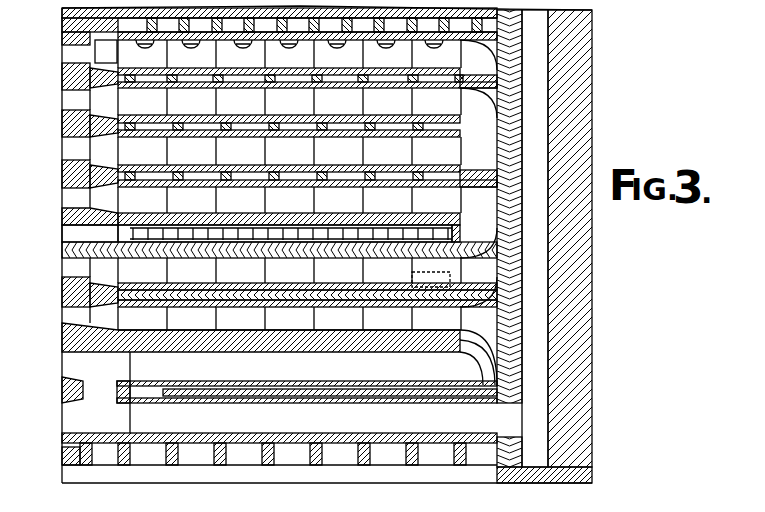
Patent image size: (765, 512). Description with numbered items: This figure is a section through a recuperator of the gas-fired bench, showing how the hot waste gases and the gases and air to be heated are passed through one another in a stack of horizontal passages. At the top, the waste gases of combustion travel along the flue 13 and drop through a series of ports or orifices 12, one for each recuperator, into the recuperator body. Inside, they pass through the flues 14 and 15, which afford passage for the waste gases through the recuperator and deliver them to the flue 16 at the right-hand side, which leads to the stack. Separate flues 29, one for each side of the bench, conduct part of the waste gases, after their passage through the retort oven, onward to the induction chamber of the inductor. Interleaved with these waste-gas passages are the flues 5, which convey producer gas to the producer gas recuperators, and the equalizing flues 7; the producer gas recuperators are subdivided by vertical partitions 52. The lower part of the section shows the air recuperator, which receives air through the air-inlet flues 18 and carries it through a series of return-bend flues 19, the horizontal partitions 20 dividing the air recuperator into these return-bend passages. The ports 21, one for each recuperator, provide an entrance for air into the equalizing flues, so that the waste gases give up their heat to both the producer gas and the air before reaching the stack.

The flues 29 is at (107, 53).
The ports or orifices 12 is at (233, 44).
The flue 13 is at (307, 67).
The flues 14 is at (289, 213).
The vertical partitions 52 is at (233, 178).
The flues 5 is at (233, 240).
The equalizing flues 7 is at (90, 235).
The ports 21 is at (431, 281).
The horizontal partitions 20 is at (263, 336).
The flues 15 is at (307, 393).
The return-bend flues 19 is at (445, 344).
The air-inlet flues 18 is at (273, 464).
The flue 16 is at (536, 238).